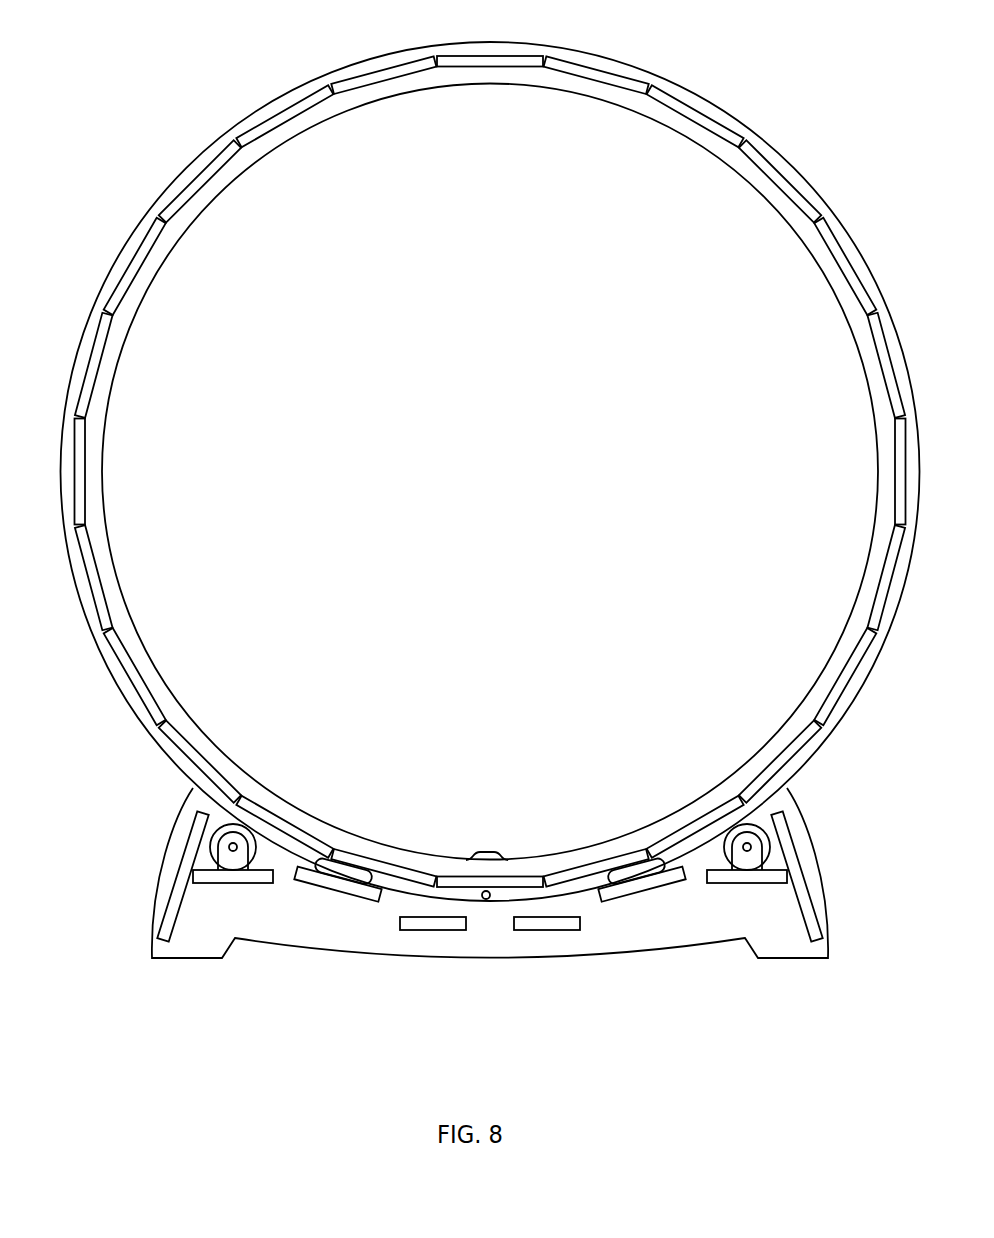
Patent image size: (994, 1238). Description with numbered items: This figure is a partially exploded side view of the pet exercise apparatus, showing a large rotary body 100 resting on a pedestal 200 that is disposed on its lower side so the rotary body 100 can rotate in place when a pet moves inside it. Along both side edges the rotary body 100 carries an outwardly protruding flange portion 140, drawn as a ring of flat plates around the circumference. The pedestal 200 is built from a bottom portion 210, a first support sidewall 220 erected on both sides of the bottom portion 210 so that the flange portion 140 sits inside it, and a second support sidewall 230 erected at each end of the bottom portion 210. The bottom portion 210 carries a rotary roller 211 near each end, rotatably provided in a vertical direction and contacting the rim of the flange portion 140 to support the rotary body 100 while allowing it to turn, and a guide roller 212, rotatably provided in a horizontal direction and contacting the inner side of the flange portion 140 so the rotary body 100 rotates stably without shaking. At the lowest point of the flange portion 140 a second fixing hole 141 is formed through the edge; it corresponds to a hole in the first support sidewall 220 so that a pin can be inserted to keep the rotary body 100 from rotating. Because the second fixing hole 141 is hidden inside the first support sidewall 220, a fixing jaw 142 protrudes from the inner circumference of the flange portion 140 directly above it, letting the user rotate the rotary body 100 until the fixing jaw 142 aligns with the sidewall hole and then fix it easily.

The rotary body 100 is at (258, 132).
The flange portion 140 is at (550, 890).
The second fixing hole 141 is at (486, 900).
The fixing jaw 142 is at (485, 855).
The pedestal 200 is at (428, 933).
The bottom portion 210 is at (330, 882).
The rotary roller 211 is at (214, 835).
The guide roller 212 is at (362, 884).
The first support sidewall 220 is at (665, 940).
The second support sidewall 230 is at (178, 890).